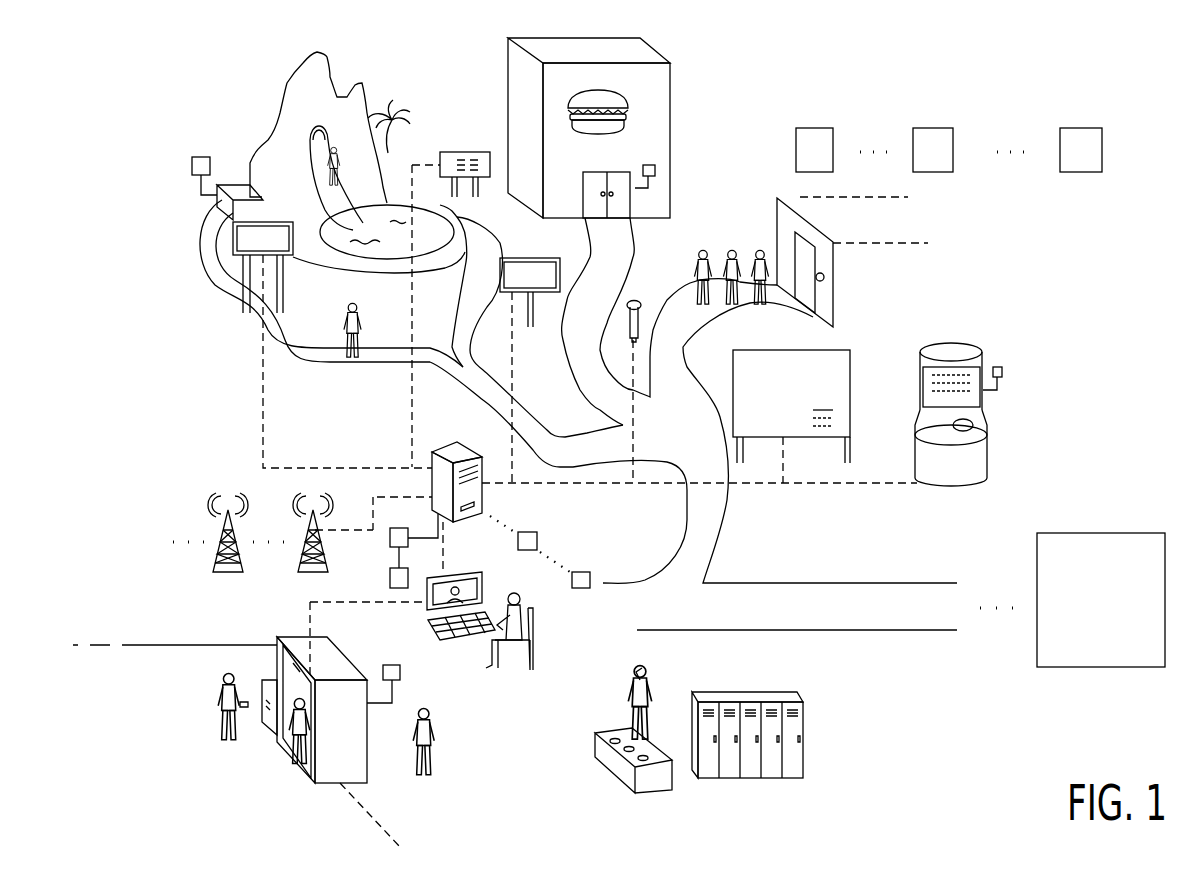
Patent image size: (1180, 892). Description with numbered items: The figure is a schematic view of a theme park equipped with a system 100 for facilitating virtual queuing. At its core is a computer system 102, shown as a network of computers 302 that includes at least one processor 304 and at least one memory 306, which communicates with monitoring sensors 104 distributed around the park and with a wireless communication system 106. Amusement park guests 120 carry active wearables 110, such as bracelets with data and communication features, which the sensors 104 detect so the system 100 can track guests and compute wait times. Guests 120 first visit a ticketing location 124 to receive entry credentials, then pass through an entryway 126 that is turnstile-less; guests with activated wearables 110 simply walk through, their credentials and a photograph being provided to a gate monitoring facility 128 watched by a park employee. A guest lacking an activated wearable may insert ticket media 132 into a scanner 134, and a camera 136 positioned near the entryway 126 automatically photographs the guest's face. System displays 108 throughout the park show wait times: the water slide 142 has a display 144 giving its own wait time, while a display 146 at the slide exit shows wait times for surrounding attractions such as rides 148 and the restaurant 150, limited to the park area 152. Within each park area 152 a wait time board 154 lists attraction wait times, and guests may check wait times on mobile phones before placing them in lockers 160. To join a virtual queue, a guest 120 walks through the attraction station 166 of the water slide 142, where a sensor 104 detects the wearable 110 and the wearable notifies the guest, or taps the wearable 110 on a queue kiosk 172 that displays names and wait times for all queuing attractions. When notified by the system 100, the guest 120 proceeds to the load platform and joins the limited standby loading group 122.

The system 100 is at (198, 378).
The computer system 102 is at (443, 430).
The monitoring sensors 104 is at (192, 168).
The wireless communication system 106 is at (245, 480).
The system displays 108 is at (262, 222).
The active wearables 110 is at (277, 735).
The amusement park guests 120 is at (330, 75).
The standby loading group 122 is at (738, 322).
The ticketing location 124 is at (230, 625).
The entryway 126 is at (343, 783).
The gate monitoring facility 128 is at (463, 653).
The ticket media 132 is at (245, 698).
The scanner 134 is at (263, 727).
The camera 136 is at (280, 647).
The water slide 142 is at (278, 100).
The display 144 is at (292, 258).
The display 146 is at (478, 152).
The rides 148 is at (788, 198).
The restaurant 150 is at (652, 50).
The park area 152 is at (437, 52).
The wait time boards 154 is at (817, 440).
The lockers 160 is at (743, 693).
The attraction station 166 is at (238, 185).
The queue kiosk 172 is at (950, 343).
The network of computers 302 is at (548, 530).
The processor 304 is at (397, 528).
The memory 306 is at (390, 580).